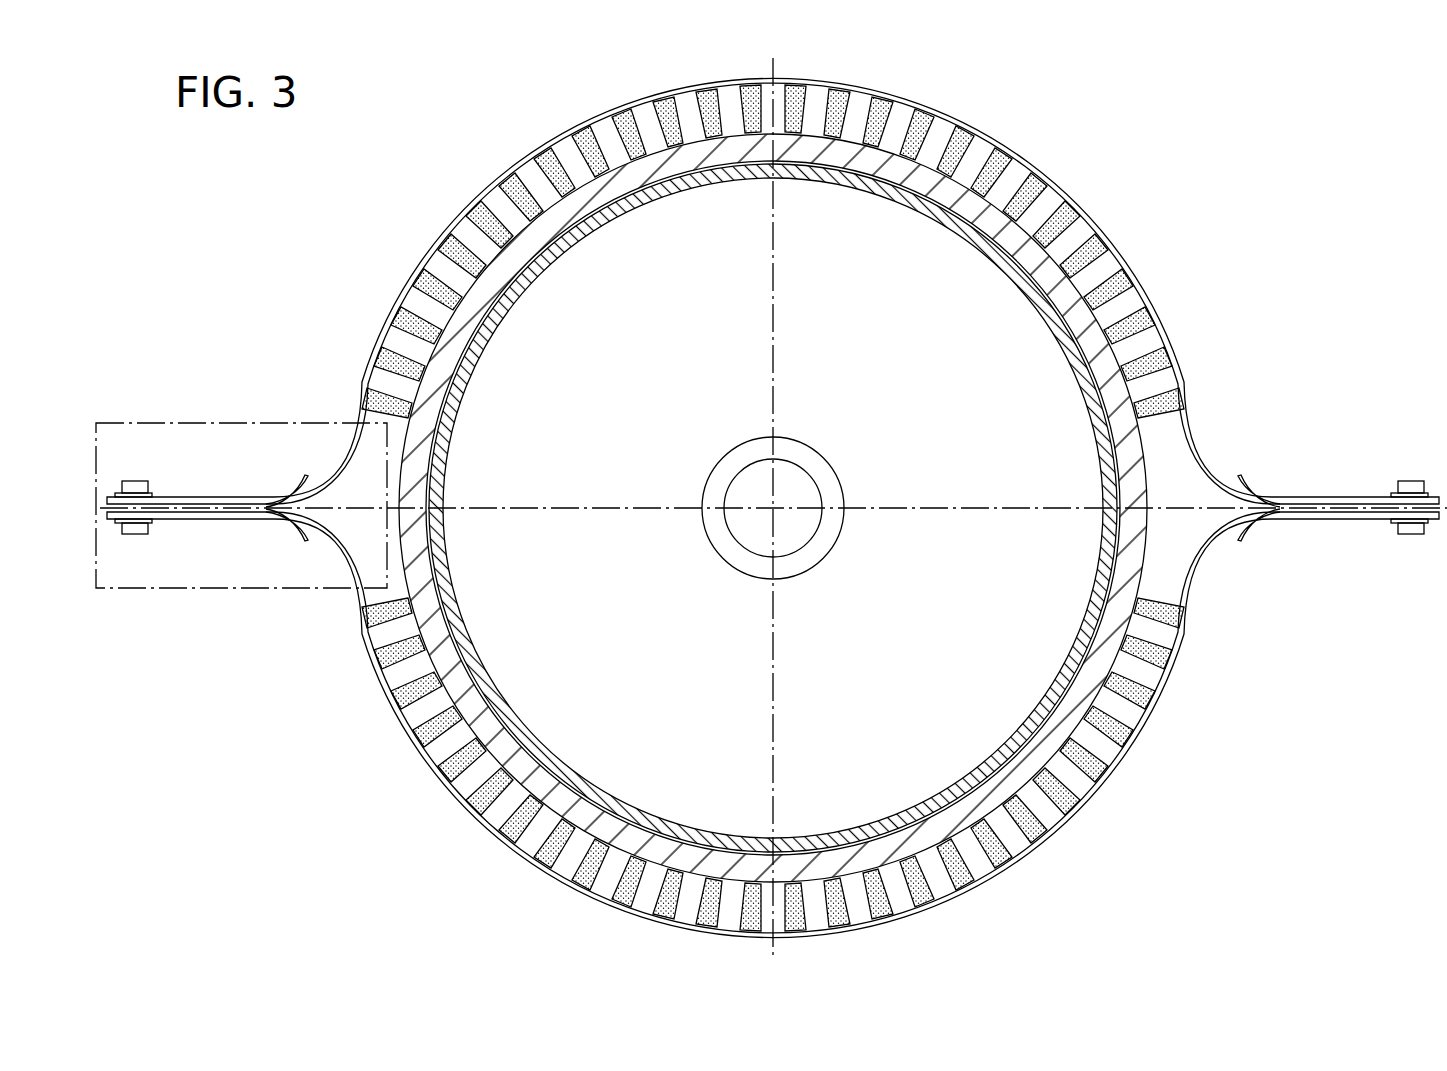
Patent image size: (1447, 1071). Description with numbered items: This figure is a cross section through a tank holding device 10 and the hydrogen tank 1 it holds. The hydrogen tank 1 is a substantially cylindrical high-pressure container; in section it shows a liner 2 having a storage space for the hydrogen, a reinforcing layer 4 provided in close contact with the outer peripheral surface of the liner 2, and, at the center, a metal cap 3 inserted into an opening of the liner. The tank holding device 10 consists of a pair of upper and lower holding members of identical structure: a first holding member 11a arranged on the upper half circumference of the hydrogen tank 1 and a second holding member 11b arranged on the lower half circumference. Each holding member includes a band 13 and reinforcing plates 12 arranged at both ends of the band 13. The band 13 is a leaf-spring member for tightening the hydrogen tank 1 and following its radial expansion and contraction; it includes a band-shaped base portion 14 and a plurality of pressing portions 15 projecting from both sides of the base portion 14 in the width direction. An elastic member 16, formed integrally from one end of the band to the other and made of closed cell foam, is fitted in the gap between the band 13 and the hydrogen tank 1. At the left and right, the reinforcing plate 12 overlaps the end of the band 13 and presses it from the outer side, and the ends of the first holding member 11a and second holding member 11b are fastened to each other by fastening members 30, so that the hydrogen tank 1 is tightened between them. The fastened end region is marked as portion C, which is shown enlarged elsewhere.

The hydrogen tank 1 is at (827, 508).
The liner 2 is at (660, 823).
The metal cap 3 is at (829, 541).
The reinforcing layer 4 is at (1129, 573).
The tank holding device 10 is at (773, 507).
The first holding member 11a is at (504, 166).
The second holding member 11b is at (445, 792).
The reinforcing plate 12 is at (250, 496).
The band 13 is at (773, 517).
The base portion 14 is at (917, 118).
The pressing portion 15 is at (613, 150).
The elastic member 16 is at (676, 140).
The fastening member 30 is at (136, 479).
The portion C is at (222, 423).